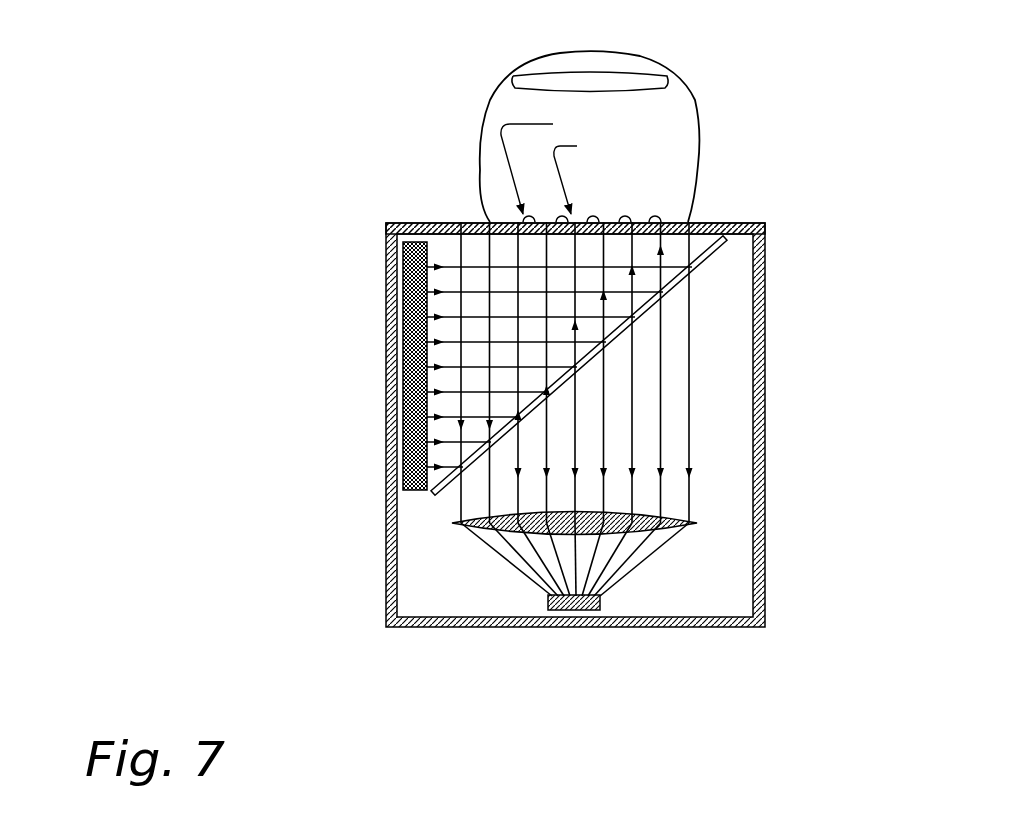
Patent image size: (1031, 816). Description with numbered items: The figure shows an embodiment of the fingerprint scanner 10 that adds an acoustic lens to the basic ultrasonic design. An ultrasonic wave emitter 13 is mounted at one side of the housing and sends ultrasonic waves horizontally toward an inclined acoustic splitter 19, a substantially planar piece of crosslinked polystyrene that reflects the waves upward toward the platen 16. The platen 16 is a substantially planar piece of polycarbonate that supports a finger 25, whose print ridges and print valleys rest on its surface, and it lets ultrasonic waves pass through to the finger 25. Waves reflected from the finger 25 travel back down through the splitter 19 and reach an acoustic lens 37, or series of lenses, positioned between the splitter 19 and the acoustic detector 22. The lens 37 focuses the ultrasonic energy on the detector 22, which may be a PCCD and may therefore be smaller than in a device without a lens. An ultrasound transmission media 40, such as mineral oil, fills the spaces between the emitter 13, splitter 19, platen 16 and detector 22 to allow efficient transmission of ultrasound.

The fingerprint scanner 10 is at (858, 322).
The ultrasonic wave emitter 13 is at (410, 490).
The platen 16 is at (705, 222).
The acoustic splitter 19 is at (702, 267).
The acoustic detector 22 is at (601, 602).
The finger 25 is at (693, 100).
The acoustic lens 37 is at (672, 520).
The ultrasound transmission media 40 is at (728, 416).